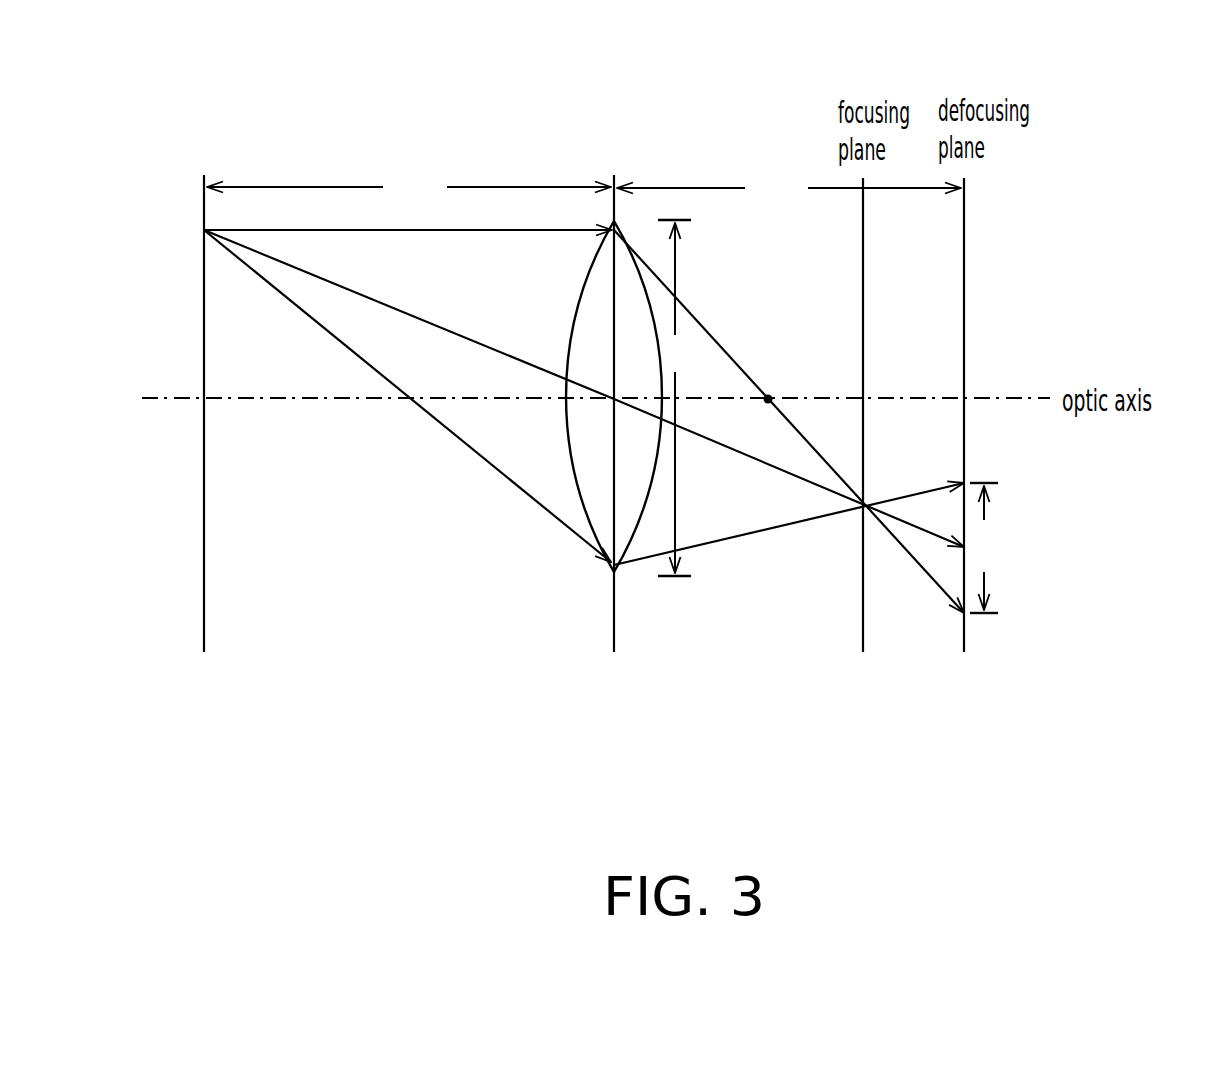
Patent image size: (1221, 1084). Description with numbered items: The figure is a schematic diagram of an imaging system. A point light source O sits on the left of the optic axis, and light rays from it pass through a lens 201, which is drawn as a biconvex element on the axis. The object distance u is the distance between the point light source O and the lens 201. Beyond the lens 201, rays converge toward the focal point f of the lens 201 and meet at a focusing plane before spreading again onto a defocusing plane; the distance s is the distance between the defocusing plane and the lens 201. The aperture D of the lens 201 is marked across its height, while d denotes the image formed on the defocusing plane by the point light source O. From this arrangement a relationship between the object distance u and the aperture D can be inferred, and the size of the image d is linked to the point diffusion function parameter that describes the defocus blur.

The lens 201 is at (596, 497).
The point light source O is at (188, 413).
The focal point f is at (773, 377).
The object distance u is at (409, 180).
The distance between defocusing plane and lens s is at (789, 183).
The aperture D is at (674, 398).
The image on the defocusing plane d is at (984, 548).